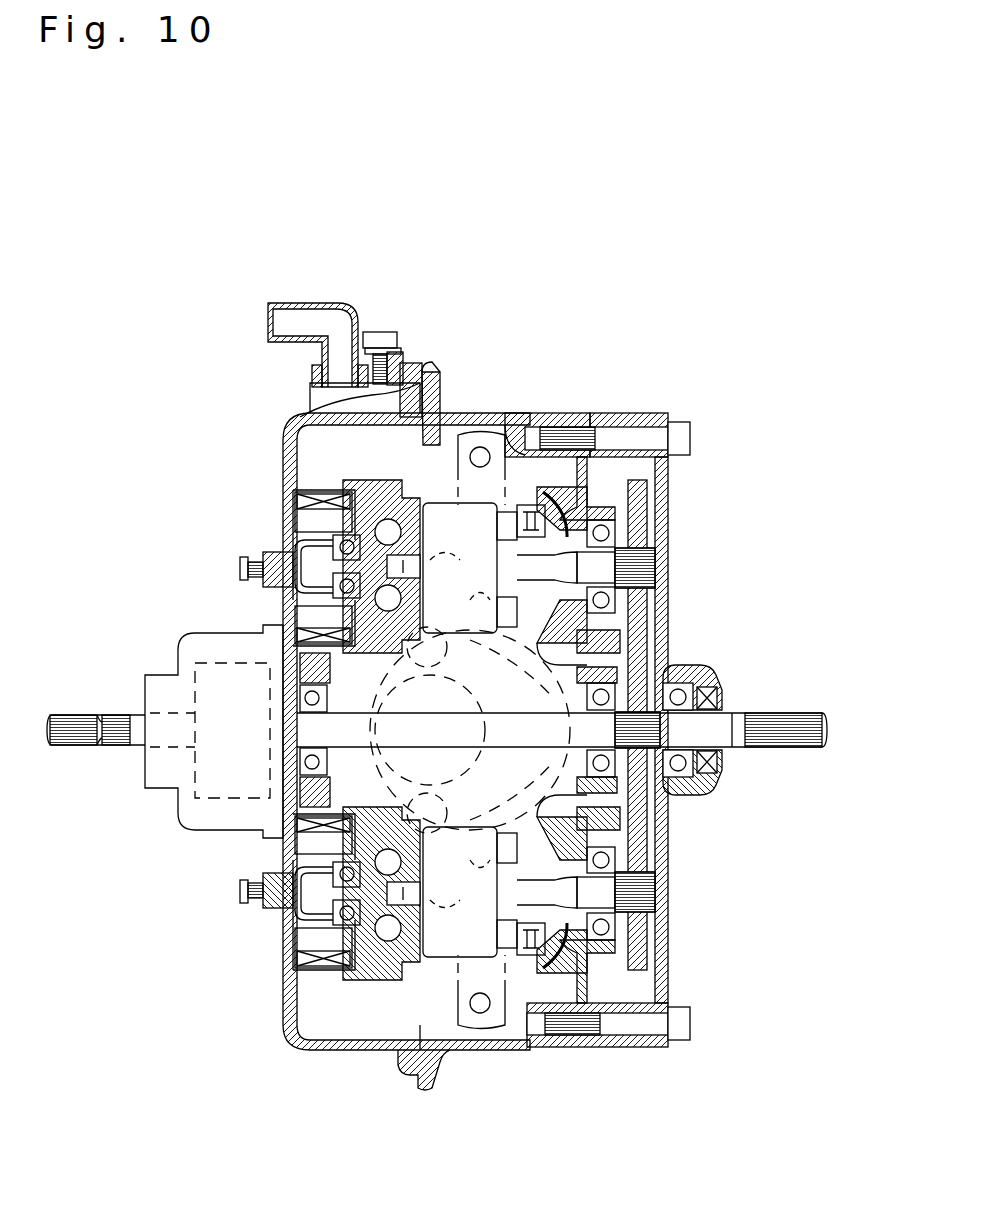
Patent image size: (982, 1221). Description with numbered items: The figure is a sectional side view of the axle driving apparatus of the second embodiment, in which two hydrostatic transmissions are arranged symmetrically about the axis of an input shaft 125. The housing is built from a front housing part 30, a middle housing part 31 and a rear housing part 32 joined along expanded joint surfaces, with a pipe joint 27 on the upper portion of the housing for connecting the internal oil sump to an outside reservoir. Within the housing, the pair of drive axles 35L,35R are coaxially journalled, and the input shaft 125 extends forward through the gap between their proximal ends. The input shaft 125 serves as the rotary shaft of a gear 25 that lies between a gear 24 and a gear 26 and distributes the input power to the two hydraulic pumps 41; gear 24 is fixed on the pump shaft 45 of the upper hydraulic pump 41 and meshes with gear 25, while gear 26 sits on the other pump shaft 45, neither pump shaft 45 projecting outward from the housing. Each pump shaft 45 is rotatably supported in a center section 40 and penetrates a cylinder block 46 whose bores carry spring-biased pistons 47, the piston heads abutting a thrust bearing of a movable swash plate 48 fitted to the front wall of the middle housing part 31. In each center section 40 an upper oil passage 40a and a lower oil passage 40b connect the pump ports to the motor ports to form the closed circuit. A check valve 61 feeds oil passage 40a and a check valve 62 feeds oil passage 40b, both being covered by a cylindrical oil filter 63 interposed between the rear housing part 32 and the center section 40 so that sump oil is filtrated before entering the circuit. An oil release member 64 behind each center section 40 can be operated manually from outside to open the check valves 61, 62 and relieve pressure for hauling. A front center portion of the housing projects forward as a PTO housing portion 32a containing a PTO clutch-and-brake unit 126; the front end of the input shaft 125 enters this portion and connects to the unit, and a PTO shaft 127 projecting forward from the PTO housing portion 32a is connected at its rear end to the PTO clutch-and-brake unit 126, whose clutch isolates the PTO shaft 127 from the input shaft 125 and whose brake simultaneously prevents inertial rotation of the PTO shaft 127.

The pipe joint 27 is at (343, 303).
The rear housing part 32 is at (292, 430).
The PTO housing portion 32a is at (212, 633).
The middle housing part 31 is at (560, 413).
The front housing part 30 is at (612, 413).
The gear 24 is at (648, 505).
The gear 26 is at (660, 855).
The gear 25 is at (652, 668).
The drive axles 35L,35R is at (634, 652).
The center section 40 is at (348, 482).
The upper oil passage 40a is at (388, 518).
The lower oil passage 40b is at (360, 658).
The hydraulic pump 41 is at (432, 466).
The pump shaft 45 is at (608, 574).
The cylinder block 46 is at (464, 545).
The pistons 47 is at (492, 618).
The movable swash plate 48 is at (532, 502).
The check valve 61 is at (323, 730).
The check valve 62 is at (323, 733).
The oil filter 63 is at (295, 492).
The oil release member 64 is at (258, 563).
The input shaft 125 is at (740, 750).
The PTO clutch-and-brake unit 126 is at (238, 750).
The PTO shaft 127 is at (105, 713).